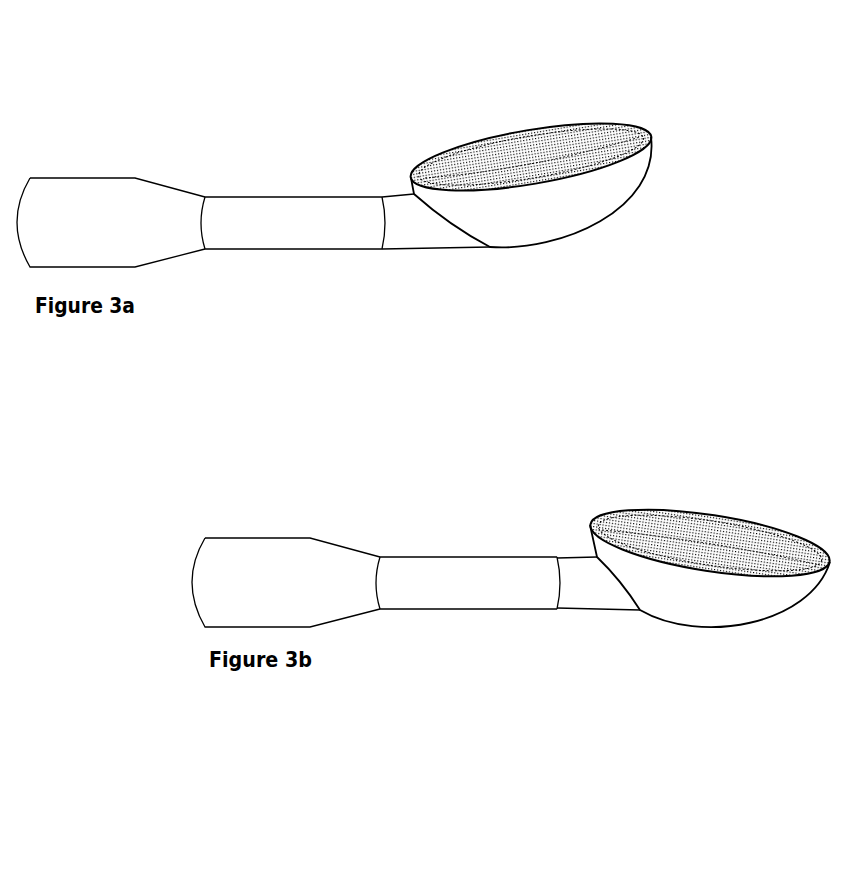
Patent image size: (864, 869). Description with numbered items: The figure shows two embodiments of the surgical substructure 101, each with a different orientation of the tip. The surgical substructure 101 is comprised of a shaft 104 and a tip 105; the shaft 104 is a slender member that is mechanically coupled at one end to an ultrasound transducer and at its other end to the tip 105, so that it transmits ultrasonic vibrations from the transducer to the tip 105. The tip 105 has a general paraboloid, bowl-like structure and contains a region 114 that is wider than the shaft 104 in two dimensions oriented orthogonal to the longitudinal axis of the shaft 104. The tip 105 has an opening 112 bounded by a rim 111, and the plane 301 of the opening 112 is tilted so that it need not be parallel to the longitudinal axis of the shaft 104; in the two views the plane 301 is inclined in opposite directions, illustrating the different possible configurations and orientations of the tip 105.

In FIG. 3A, the surgical substructure 101 is at (203, 399).
In FIG. 3B, the surgical substructure 101 is at (378, 785).
In FIG. 3A, the shaft 104 is at (203, 325).
In FIG. 3B, the shaft 104 is at (378, 708).
In FIG. 3A, the tip 105 is at (379, 325).
In FIG. 3B, the tip 105 is at (553, 708).
In FIG. 3A, the rim of bowl 111 is at (480, 143).
In FIG. 3B, the rim of bowl 111 is at (623, 510).
In FIG. 3A, the opening 112 is at (431, 93).
In FIG. 3B, the opening 112 is at (612, 487).
In FIG. 3A, the region 114 is at (414, 257).
In FIG. 3B, the region 114 is at (588, 643).
In FIG. 3A, the plane of opening 301 is at (457, 167).
In FIG. 3B, the plane of opening 301 is at (647, 543).